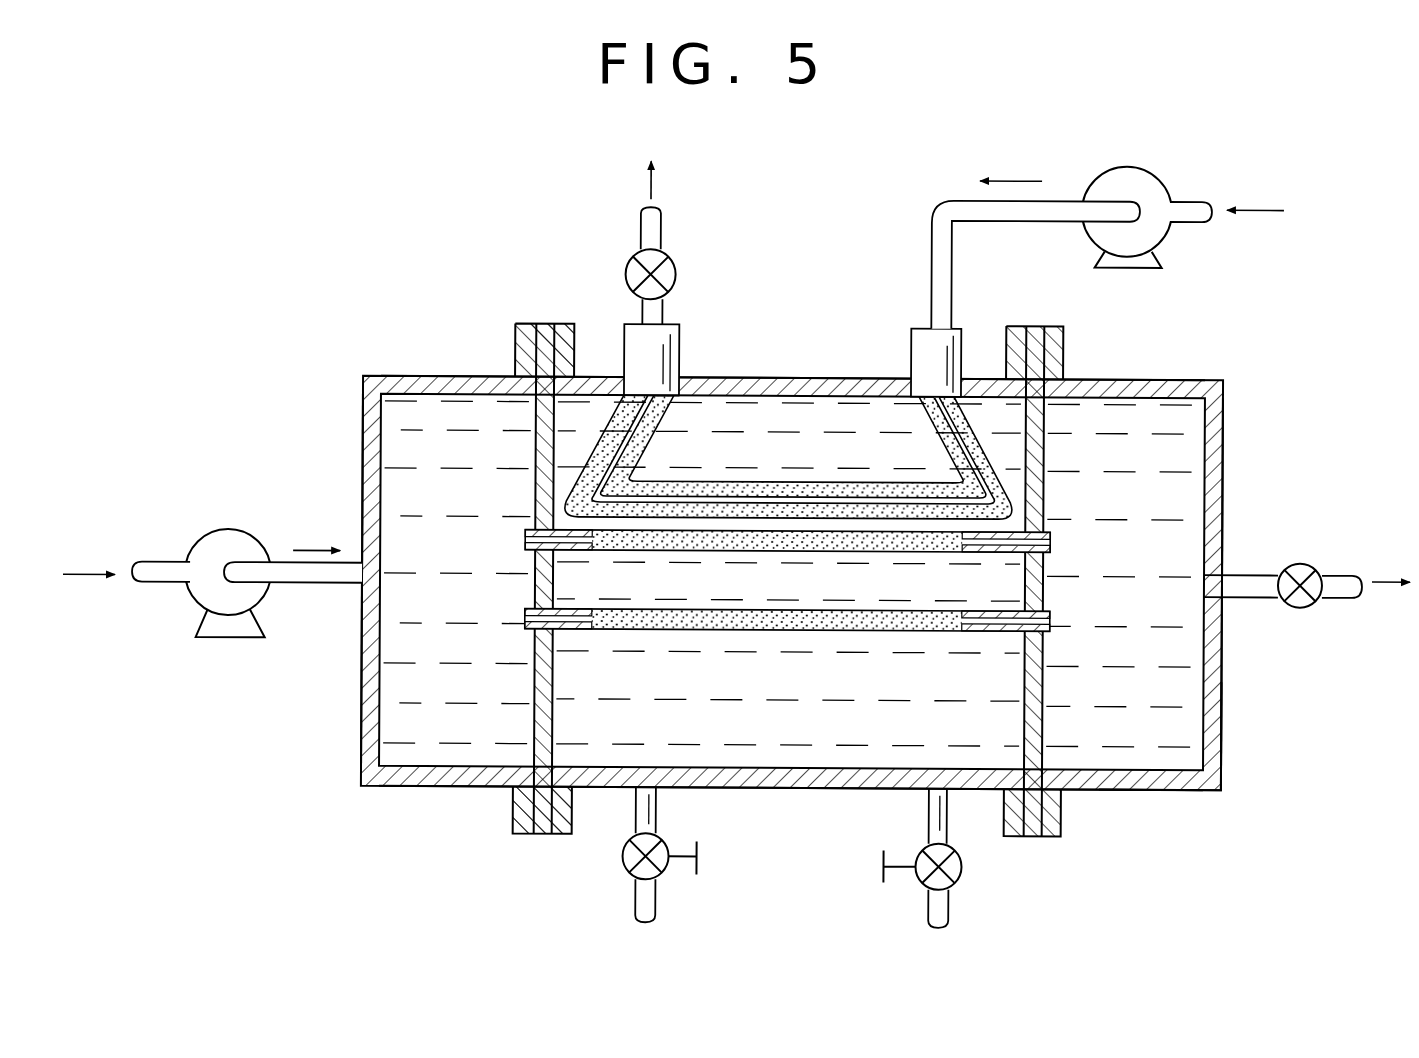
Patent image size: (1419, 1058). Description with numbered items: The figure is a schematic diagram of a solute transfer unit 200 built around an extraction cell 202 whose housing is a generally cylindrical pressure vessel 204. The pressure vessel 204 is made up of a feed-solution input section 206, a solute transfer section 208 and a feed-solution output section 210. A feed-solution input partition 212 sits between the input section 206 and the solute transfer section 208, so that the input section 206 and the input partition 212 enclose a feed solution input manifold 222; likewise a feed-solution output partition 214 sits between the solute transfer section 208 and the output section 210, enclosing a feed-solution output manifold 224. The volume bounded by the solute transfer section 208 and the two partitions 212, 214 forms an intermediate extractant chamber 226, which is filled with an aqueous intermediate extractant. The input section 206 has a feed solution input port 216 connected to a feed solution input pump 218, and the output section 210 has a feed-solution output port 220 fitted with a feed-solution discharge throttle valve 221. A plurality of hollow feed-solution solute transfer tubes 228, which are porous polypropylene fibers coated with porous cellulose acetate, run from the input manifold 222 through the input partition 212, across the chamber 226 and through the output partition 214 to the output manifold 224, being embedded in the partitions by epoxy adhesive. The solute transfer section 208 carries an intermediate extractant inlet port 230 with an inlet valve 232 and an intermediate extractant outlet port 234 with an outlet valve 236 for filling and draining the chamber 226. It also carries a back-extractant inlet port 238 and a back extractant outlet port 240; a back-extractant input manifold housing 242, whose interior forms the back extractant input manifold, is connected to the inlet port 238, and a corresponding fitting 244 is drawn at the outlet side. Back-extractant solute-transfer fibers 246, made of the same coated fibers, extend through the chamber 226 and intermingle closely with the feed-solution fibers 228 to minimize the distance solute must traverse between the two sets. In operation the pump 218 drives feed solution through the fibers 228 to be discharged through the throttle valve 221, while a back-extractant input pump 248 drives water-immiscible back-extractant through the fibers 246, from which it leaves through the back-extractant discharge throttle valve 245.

The solute transfer unit 200 is at (1210, 372).
The extraction cell 202 is at (1212, 793).
The pressure vessel 204 is at (1150, 378).
The feed-solution input section 206 is at (388, 378).
The solute transfer section 208 is at (762, 788).
The feed-solution output section 210 is at (1222, 705).
The feed-solution input partition 212 is at (533, 665).
The feed-solution output partition 214 is at (1045, 710).
The feed solution input port 216 is at (380, 584).
The feed solution input pump 218 is at (242, 534).
The feed-solution output port 220 is at (1200, 596).
The feed-solution discharge throttle valve 221 is at (1308, 561).
The feed solution input manifold 222 is at (471, 563).
The feed-solution output manifold 224 is at (1151, 568).
The intermediate extractant chamber 226 is at (809, 690).
The feed-solution solute transfer tubes 228 is at (822, 548).
The aqueous intermediate extractant inlet port 230 is at (648, 767).
The intermediate-extractant inlet valve 232 is at (624, 857).
The intermediate extractant outlet port 234 is at (935, 767).
The intermediate outlet valve 236 is at (961, 879).
The back-extractant inlet port 238 is at (908, 378).
The back extractant outlet port 240 is at (680, 378).
The back-extractant input manifold housing 242 is at (962, 338).
The fitting 244 is at (680, 345).
The back-extractant discharge throttle valve 245 is at (625, 268).
The back-extractant solute-transfer fibers 246 is at (818, 482).
The back-extractant input pump 248 is at (1150, 172).